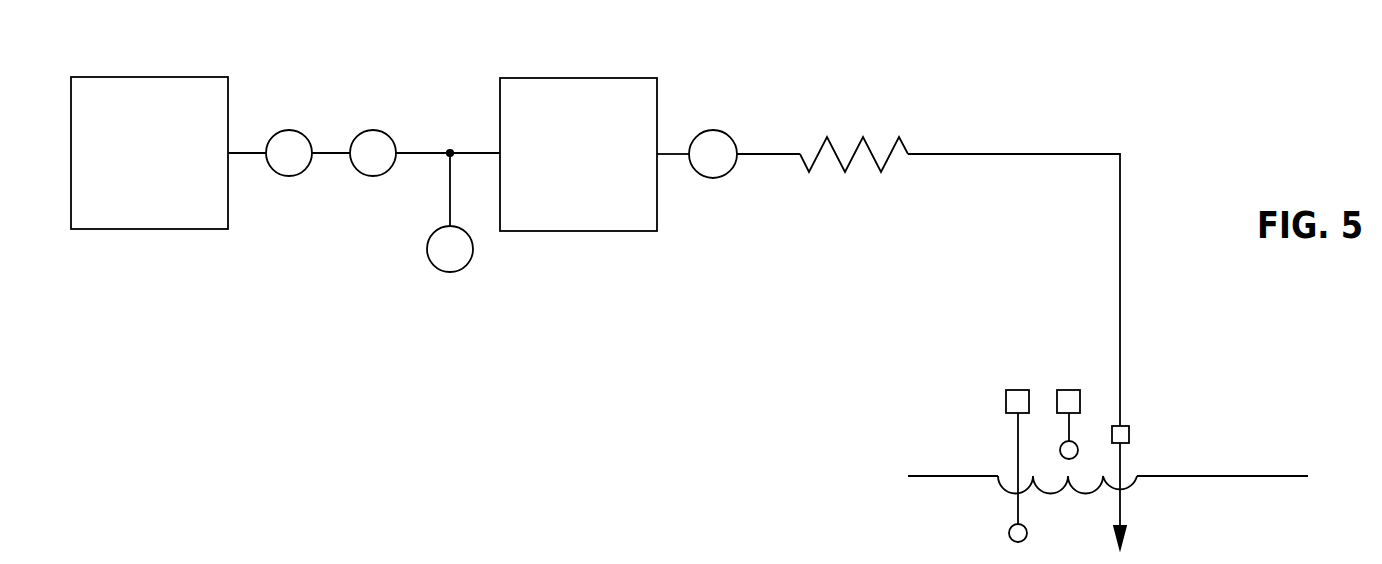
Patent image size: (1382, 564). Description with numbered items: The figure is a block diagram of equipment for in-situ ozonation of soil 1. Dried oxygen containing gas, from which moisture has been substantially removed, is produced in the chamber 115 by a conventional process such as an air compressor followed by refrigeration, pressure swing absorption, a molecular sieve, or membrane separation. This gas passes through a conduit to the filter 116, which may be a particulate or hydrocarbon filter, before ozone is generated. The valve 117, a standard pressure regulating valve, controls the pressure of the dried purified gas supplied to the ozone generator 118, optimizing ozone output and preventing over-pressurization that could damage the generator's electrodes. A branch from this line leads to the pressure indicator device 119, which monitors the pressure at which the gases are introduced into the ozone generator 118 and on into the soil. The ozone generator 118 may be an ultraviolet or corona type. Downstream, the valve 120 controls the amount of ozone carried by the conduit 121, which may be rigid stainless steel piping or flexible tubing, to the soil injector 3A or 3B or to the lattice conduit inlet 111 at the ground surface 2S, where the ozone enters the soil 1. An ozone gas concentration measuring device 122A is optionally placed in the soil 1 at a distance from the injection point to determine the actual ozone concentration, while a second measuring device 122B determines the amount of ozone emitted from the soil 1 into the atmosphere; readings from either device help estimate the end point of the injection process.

The chamber 115 is at (135, 77).
The filter 116 is at (290, 176).
The valve 117 is at (372, 130).
The ozone generator 118 is at (588, 78).
The pressure indicator device 119 is at (437, 268).
The valve 120 is at (712, 130).
The conduit 121 is at (866, 138).
The ozone gas concentration measuring device 122A is at (1010, 390).
The ozone gas concentration measuring device 122B is at (1070, 390).
The surface 2S is at (1200, 476).
The soil 1 is at (910, 538).
The lattice conduit inlet 111 is at (1193, 488).
The soil injector 3A is at (1120, 487).
The soil injector 3B is at (1121, 512).